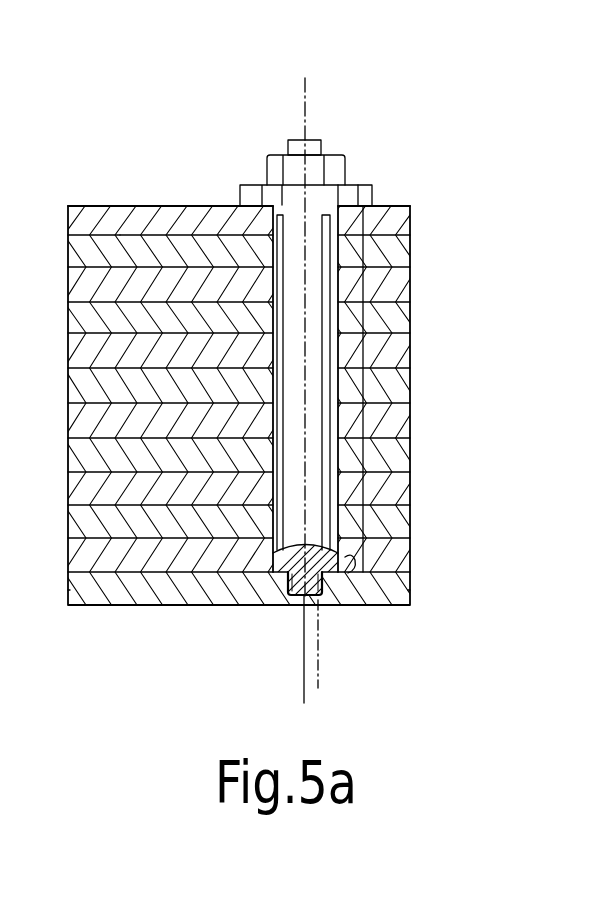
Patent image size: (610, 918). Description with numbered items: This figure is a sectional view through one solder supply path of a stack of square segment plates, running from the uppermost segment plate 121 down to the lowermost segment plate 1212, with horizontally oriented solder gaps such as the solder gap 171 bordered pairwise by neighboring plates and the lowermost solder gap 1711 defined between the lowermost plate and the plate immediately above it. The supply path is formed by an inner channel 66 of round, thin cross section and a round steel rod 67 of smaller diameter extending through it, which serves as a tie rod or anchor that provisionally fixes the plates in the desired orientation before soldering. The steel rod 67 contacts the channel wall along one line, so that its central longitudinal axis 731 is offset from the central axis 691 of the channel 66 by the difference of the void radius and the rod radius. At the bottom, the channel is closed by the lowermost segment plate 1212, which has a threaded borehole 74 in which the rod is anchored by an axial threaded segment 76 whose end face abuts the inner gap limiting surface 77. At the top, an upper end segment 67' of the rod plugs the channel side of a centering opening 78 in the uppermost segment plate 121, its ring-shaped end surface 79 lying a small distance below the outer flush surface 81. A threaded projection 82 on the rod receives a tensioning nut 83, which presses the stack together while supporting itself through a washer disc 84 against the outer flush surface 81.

The inner channel 66 is at (353, 353).
The steel rod 67 is at (409, 382).
The upper end segment of the tie rod steel rod 67' is at (443, 339).
The uppermost segment plate 121 is at (412, 222).
The solder gap 171 is at (412, 233).
The lowermost solder gap 1711 is at (410, 570).
The lowermost segment plate 1212 is at (410, 588).
The threaded borehole 74 is at (276, 623).
The axial threaded segment 76 is at (297, 603).
The inner gap limiting surface 77 is at (350, 568).
The centering opening 78 is at (207, 203).
The ring-shaped end surface 79 is at (358, 186).
The outer flush surface 81 is at (123, 203).
The threaded projection 82 is at (294, 140).
The tensioning nut 83 is at (341, 152).
The washer disc 84 is at (258, 187).
The central longitudinal axis of the tie rod 731 is at (303, 680).
The central axis of the channel 691 is at (320, 672).